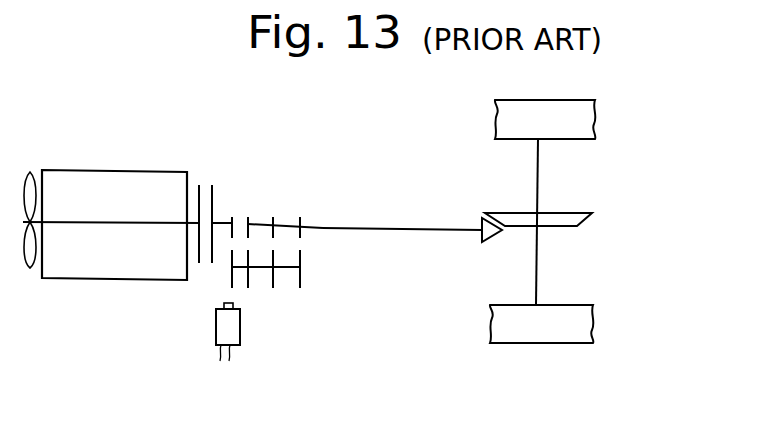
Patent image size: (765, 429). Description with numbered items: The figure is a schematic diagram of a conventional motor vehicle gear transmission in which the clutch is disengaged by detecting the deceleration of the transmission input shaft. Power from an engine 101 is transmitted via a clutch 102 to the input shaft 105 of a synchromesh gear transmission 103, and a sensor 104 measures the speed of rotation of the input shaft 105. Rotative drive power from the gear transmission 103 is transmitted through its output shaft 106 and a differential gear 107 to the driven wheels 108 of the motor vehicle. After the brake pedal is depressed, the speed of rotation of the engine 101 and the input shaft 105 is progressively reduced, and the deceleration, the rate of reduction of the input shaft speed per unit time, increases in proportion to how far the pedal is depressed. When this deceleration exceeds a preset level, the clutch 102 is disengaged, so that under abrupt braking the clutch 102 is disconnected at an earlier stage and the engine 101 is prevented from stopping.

The engine 101 is at (115, 170).
The clutch 102 is at (212, 176).
The synchromesh gear transmission 103 is at (280, 211).
The sensor 104 is at (233, 327).
The input shaft 105 is at (218, 222).
The output shaft 106 is at (323, 228).
The differential gear 107 is at (485, 213).
The driven wheels 108 is at (583, 140).